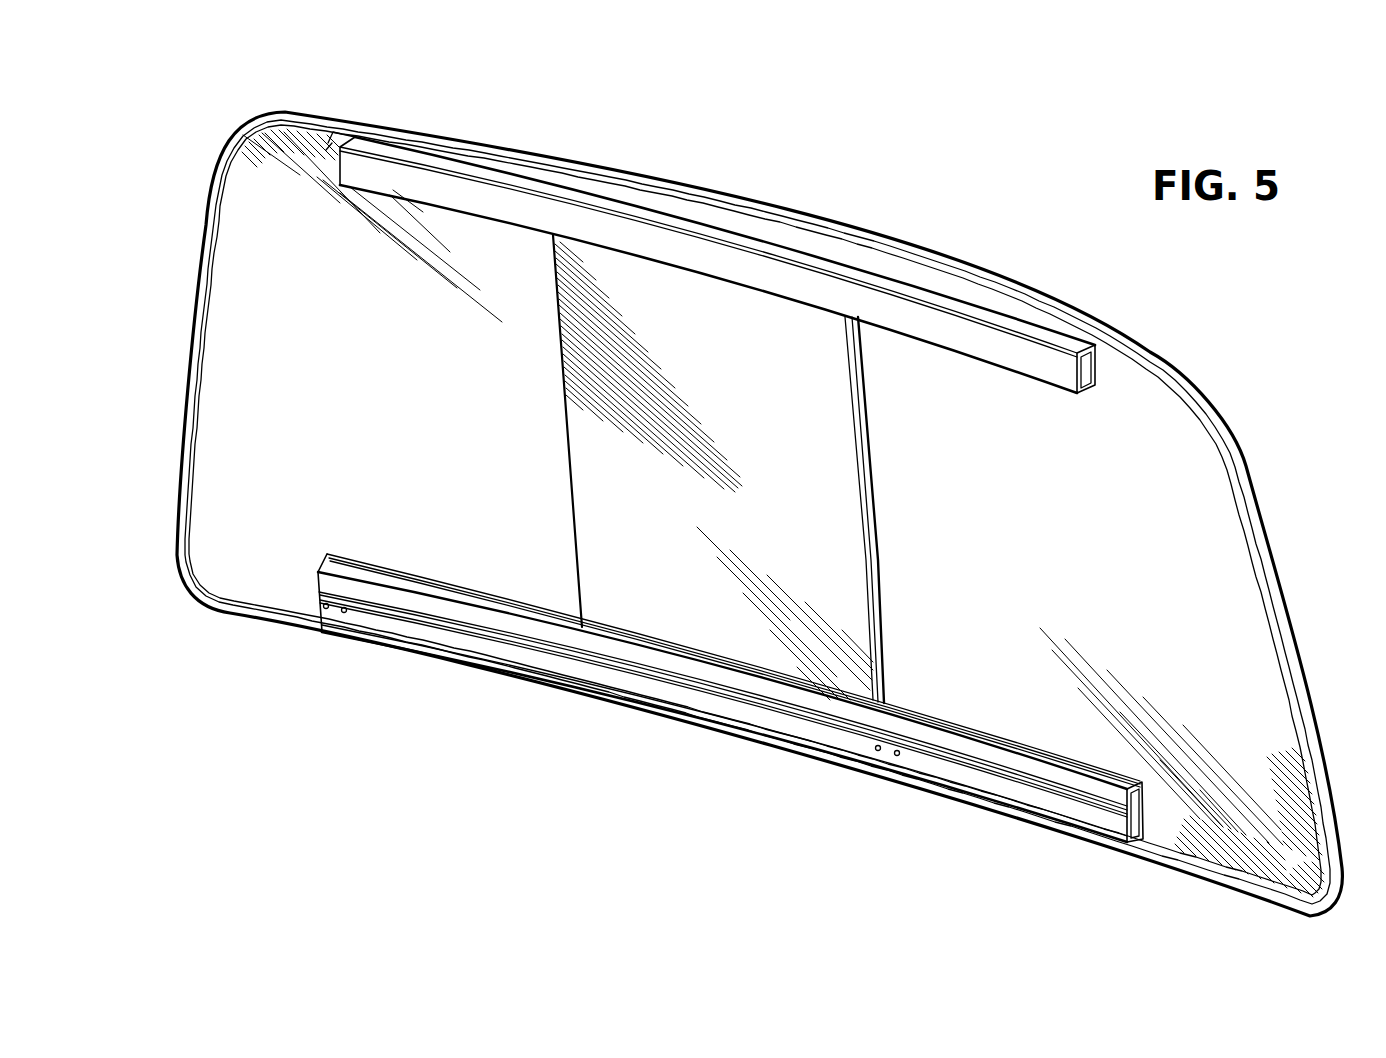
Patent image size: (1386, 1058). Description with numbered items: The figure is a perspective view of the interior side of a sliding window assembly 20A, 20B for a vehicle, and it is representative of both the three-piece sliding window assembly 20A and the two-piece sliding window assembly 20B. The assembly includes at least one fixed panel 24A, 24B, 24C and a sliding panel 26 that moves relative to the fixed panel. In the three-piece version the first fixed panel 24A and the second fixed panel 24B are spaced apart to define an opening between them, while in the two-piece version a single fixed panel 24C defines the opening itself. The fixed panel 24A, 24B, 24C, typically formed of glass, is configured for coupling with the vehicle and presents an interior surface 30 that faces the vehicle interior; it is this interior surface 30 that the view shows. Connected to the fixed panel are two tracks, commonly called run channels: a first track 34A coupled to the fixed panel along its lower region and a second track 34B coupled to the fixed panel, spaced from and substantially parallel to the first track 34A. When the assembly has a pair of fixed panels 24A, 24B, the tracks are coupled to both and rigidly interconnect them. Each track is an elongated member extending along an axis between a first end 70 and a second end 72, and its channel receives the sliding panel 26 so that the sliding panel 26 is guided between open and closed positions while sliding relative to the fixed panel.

The three-piece sliding window assembly 20A is at (1231, 366).
The two-piece sliding window assembly 20B is at (771, 514).
The first fixed panel 24A is at (1187, 593).
The second fixed panel 24B is at (288, 545).
The single fixed panel 24C is at (771, 514).
The sliding panel 26 is at (653, 603).
The interior surface 30 is at (392, 386).
The first track 34A is at (961, 714).
The second track 34B is at (1066, 394).
The first end 70 is at (1090, 368).
The second end 72 is at (326, 150).